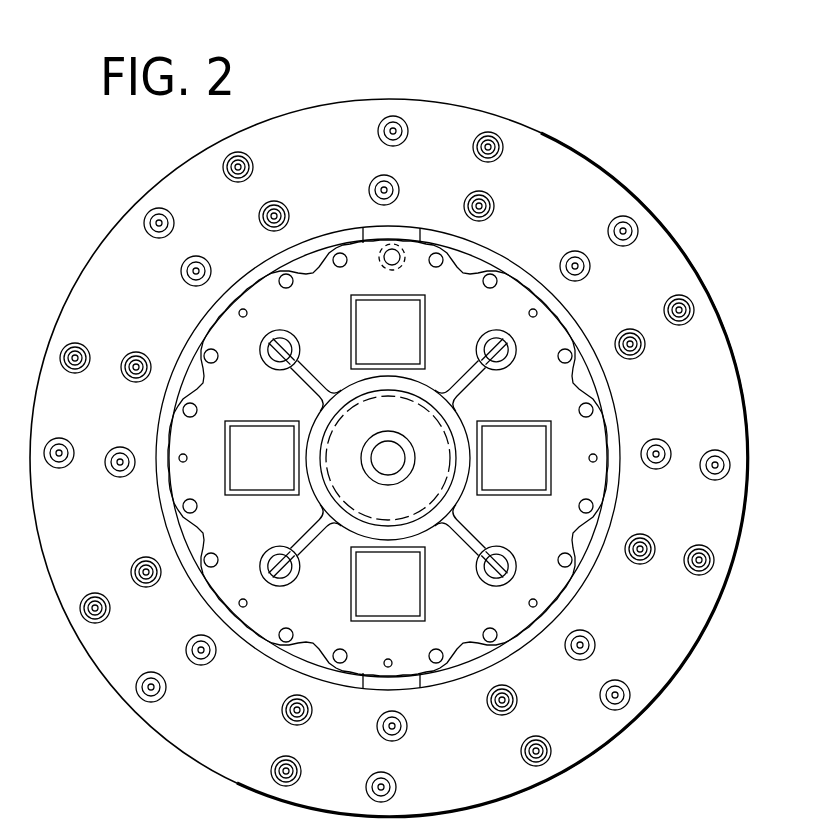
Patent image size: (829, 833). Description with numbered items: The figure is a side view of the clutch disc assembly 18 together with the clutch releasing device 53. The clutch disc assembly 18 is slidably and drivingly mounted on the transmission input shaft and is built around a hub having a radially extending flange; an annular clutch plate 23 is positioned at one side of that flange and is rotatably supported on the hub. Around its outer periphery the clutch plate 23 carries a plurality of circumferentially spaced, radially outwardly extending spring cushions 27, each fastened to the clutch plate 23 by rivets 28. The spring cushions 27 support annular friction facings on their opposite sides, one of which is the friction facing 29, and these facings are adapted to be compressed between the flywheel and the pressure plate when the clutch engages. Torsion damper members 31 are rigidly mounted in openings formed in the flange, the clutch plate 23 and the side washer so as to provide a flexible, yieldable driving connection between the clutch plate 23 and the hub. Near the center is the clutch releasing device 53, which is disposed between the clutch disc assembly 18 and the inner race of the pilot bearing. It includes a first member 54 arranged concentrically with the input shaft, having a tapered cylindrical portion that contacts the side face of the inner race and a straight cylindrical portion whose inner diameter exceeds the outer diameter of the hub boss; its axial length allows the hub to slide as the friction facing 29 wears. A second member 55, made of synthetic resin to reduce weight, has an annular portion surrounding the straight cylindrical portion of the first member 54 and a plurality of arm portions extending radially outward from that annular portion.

The clutch disc assembly 18 is at (687, 661).
The annular clutch plate 23 is at (593, 446).
The spring cushions 27 is at (560, 308).
The rivets 28 is at (503, 641).
The annular friction facing 29 is at (560, 158).
The torsion damper members 31 is at (518, 437).
The clutch releasing device 53 is at (466, 410).
The first member 54 is at (358, 502).
The second member 55 is at (435, 528).